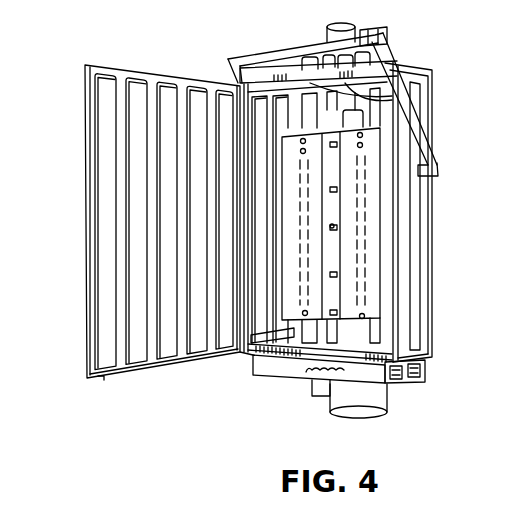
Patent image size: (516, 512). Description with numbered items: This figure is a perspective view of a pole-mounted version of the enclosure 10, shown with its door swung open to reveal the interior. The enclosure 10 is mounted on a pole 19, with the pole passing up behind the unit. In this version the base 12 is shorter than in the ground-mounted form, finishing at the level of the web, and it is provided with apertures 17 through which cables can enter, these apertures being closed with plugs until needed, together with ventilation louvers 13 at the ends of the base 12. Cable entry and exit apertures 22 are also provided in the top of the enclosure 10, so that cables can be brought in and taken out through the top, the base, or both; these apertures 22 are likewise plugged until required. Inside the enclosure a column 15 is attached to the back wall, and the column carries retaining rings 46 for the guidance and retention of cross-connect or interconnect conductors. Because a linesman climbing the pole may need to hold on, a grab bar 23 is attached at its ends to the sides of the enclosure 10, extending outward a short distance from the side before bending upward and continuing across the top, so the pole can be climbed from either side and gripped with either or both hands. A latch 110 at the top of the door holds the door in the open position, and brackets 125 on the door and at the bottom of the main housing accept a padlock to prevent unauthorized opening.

The enclosure 10 is at (432, 63).
The base 12 is at (268, 370).
The ventilation louvers 13 is at (425, 380).
The column 15 is at (312, 203).
The apertures 17 is at (307, 373).
The pole 19 is at (387, 37).
The cable entry and exit apertures 22 is at (353, 95).
The grab bar 23 is at (270, 57).
The retaining rings 46 is at (332, 225).
The latch 110 is at (225, 80).
The brackets 125 is at (393, 402).